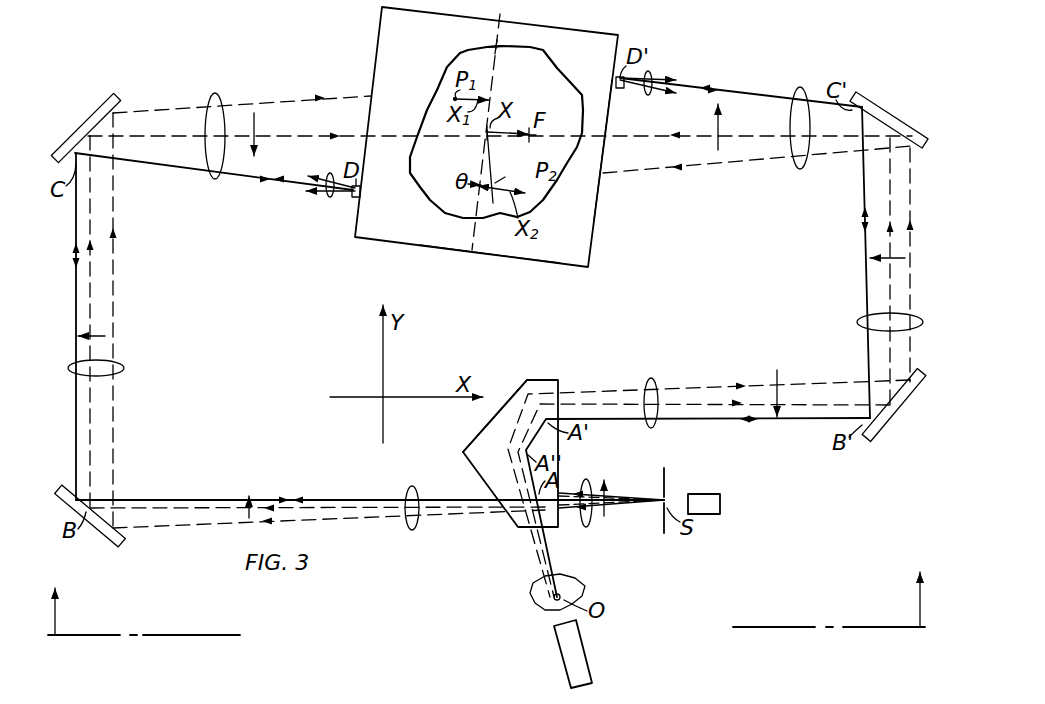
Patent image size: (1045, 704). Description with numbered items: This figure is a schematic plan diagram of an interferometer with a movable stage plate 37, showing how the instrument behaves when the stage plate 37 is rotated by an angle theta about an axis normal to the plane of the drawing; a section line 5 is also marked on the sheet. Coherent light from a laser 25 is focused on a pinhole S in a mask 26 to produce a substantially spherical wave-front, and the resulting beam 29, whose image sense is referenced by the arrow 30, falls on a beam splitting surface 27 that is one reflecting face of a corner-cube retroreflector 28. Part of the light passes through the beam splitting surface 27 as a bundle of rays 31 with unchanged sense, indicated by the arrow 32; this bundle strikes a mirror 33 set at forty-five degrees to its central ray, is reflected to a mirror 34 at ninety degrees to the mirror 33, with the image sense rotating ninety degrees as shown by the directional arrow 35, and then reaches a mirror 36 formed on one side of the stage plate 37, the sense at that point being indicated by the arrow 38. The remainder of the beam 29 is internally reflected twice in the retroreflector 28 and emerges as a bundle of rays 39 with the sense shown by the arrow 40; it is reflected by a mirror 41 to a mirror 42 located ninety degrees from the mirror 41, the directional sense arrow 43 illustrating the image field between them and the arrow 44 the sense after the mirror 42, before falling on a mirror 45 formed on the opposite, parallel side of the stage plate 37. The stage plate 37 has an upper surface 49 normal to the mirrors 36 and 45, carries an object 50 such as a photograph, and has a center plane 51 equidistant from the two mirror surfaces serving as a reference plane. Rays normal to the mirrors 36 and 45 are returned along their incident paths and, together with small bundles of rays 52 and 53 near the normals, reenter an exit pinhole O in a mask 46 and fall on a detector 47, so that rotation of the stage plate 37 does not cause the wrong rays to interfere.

The laser 25 is at (719, 512).
The mask 26 is at (667, 480).
The beam splitting surface 27 is at (477, 463).
The retroreflector 28 is at (511, 390).
The beam 29 is at (584, 528).
The arrow 30 is at (606, 492).
The bundle of rays 31 is at (211, 108).
The arrow 32 is at (248, 505).
The mirror 33 is at (108, 545).
The mirror 34 is at (92, 118).
The directional arrow 35 is at (102, 334).
The mirror 36 is at (378, 57).
The stage plate 37 is at (466, 28).
The arrow 38 is at (256, 130).
The bundle of rays 39 is at (799, 92).
The arrow 40 is at (775, 390).
The mirror 41 is at (893, 429).
The mirror 42 is at (887, 118).
The directional sense arrow 43 is at (884, 262).
The arrow 44 is at (720, 128).
The mirror 45 is at (598, 242).
The mask 46 is at (580, 582).
The detector 47 is at (583, 661).
The upper surface 49 is at (550, 257).
The object 50 is at (553, 68).
The center plane 51 is at (500, 40).
The bundle of rays 52 is at (331, 197).
The bundle of rays 53 is at (654, 70).
The section line 5- 5 is at (487, 590).